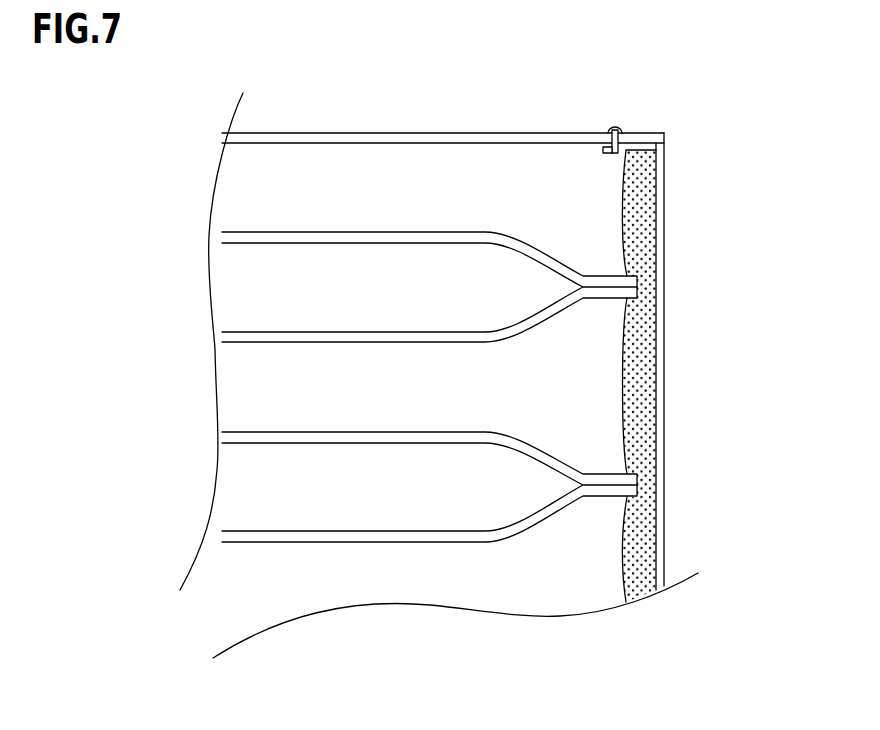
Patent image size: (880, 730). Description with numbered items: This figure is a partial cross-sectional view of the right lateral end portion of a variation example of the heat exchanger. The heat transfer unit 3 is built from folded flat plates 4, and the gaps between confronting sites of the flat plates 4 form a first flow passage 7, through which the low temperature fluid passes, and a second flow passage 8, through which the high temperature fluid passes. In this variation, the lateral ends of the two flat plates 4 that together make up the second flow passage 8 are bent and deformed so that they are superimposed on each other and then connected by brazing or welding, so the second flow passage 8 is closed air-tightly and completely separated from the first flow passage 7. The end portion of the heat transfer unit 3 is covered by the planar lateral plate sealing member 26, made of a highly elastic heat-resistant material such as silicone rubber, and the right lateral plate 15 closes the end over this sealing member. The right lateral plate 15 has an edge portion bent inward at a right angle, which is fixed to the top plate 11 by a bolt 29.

The heat transfer unit 3 is at (278, 543).
The flat plate 4 is at (483, 540).
The first flow passage 7 is at (452, 198).
The second flow passage 8 is at (385, 288).
The top plate 11 is at (538, 132).
The right lateral plate 15 is at (664, 357).
The lateral plate sealing member 26 is at (638, 243).
The bolt 29 is at (617, 127).